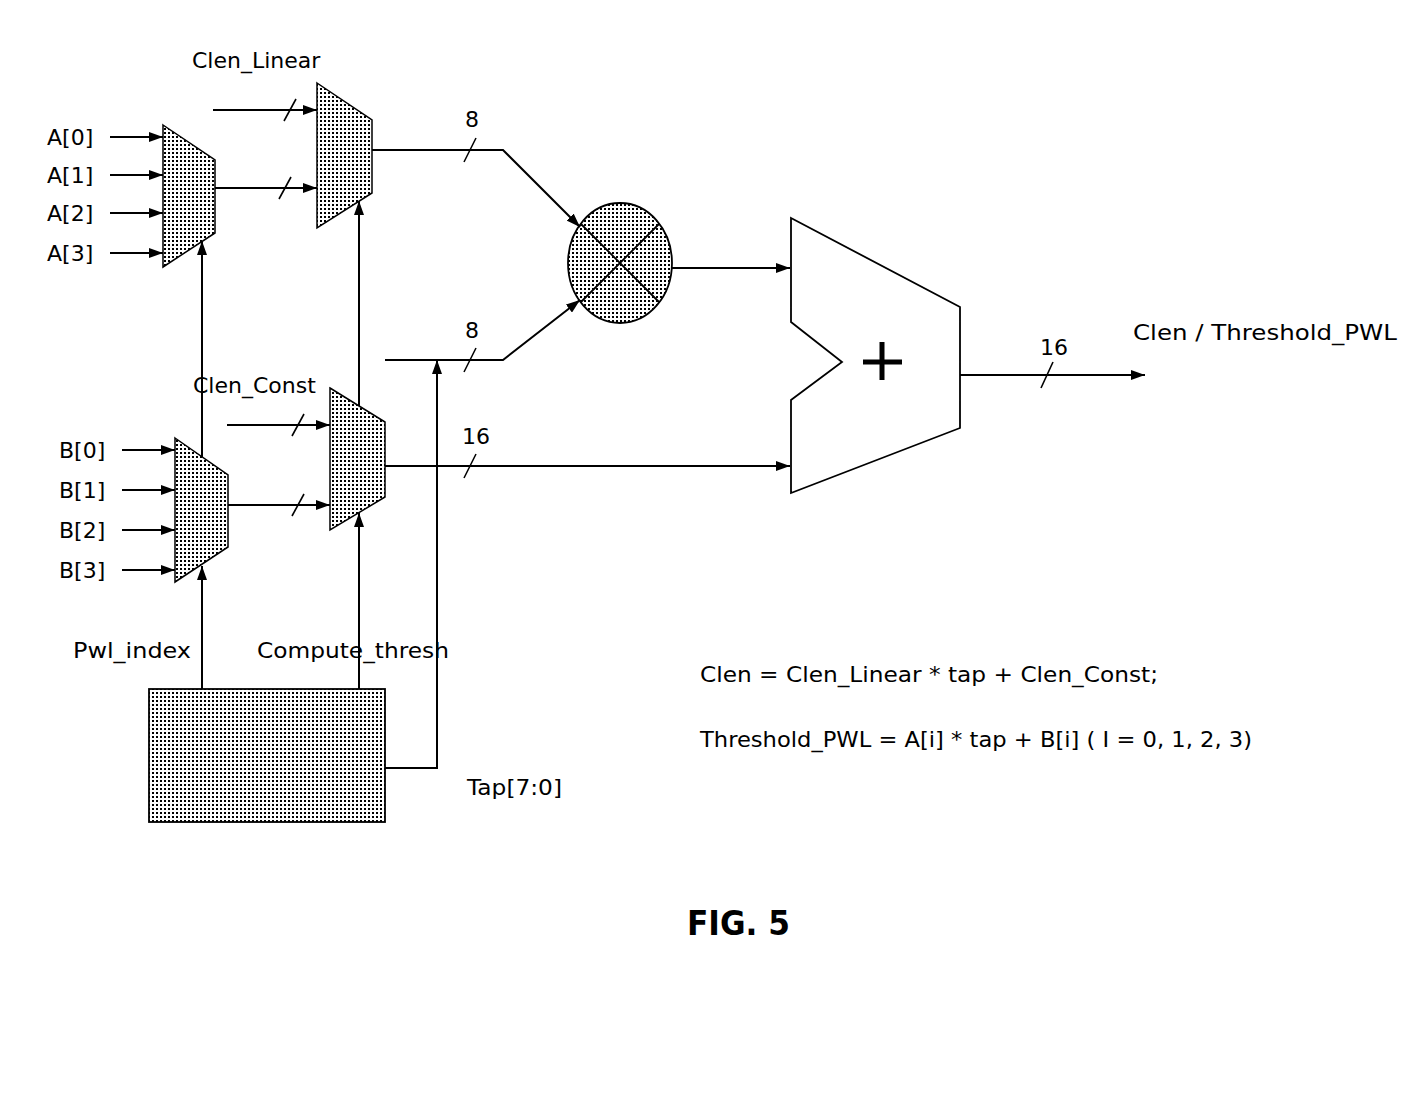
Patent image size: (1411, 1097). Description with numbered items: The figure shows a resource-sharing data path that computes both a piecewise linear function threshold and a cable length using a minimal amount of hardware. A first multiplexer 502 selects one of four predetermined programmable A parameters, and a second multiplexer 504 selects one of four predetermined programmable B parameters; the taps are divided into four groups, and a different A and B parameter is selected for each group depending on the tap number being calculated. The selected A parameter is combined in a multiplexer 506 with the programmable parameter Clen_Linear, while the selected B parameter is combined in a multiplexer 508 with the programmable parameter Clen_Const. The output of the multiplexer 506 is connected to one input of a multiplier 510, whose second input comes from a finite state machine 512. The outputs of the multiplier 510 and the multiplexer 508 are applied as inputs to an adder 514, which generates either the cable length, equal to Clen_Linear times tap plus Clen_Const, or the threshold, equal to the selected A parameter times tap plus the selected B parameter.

The first multiplexer 502 is at (190, 142).
The second multiplexer 504 is at (222, 555).
The multiplexer 506 is at (365, 114).
The multiplexer 508 is at (380, 500).
The multiplier 510 is at (616, 203).
The finite state machine 512 is at (350, 823).
The adder 514 is at (897, 273).